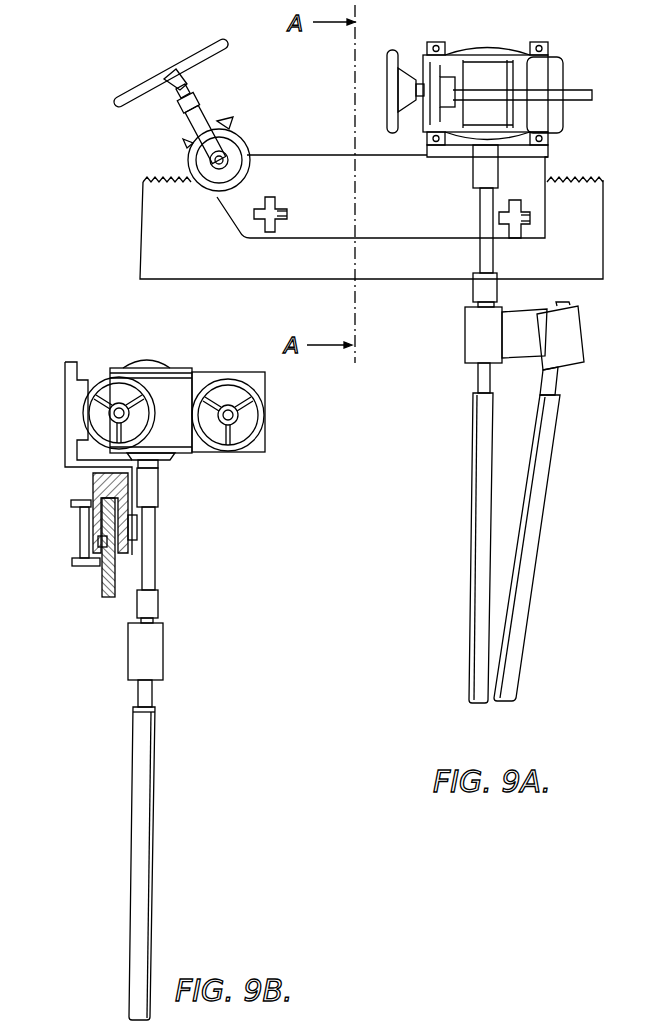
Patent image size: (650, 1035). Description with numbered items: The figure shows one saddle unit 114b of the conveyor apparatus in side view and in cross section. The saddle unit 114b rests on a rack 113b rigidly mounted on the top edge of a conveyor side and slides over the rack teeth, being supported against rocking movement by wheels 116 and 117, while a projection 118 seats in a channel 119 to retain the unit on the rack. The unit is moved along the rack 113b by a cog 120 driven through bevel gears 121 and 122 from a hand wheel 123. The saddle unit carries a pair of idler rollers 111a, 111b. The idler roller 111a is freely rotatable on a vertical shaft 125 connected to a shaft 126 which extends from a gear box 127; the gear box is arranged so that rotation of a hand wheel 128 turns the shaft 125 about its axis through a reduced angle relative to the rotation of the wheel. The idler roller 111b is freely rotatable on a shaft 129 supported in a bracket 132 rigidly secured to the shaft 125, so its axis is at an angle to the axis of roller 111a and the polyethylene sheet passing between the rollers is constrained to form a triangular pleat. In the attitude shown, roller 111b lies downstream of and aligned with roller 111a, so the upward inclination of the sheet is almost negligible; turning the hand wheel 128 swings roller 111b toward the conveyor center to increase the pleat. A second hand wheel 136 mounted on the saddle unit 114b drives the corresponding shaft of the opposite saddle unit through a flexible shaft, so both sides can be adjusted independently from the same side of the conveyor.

In FIG. 9A, the idler roller 111a is at (474, 560).
In FIG. 9B, the idler roller 111a is at (150, 820).
In FIG. 9A, the idler roller 111b is at (536, 556).
In FIG. 9A, the rack 113b is at (337, 228).
In FIG. 9B, the rack 113b is at (107, 600).
In FIG. 9A, the saddle unit 114b is at (333, 142).
In FIG. 9A, the wheel 116 is at (288, 214).
In FIG. 9B, the wheel 117 is at (72, 503).
In FIG. 9B, the projection 118 is at (98, 540).
In FIG. 9B, the channel 119 is at (98, 565).
In FIG. 9B, the cog 120 is at (92, 483).
In FIG. 9A, the bevel gear 121 is at (183, 143).
In FIG. 9A, the bevel gear 122 is at (247, 173).
In FIG. 9A, the hand wheel 123 is at (175, 68).
In FIG. 9A, the vertical shaft 125 is at (478, 378).
In FIG. 9A, the shaft 126 is at (480, 221).
In FIG. 9A, the gear box 127 is at (489, 50).
In FIG. 9B, the gear box 127 is at (176, 355).
In FIG. 9B, the hand wheel 128 is at (106, 372).
In FIG. 9A, the shaft 129 is at (560, 382).
In FIG. 9A, the bracket 132 is at (526, 350).
In FIG. 9A, the hand wheel 136 is at (389, 58).
In FIG. 9B, the hand wheel 136 is at (228, 379).